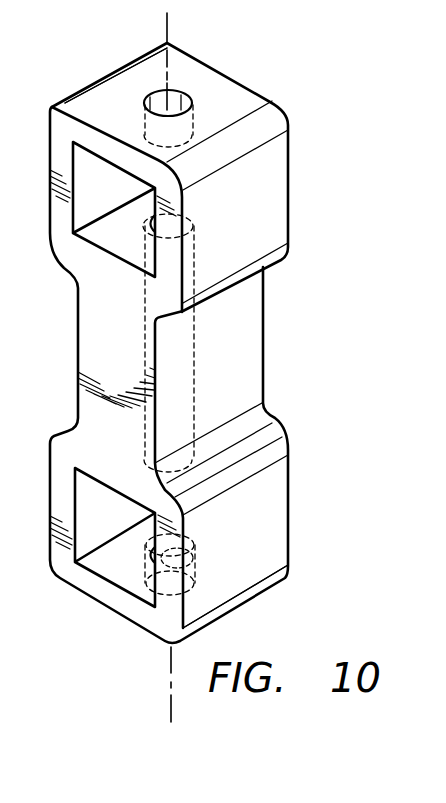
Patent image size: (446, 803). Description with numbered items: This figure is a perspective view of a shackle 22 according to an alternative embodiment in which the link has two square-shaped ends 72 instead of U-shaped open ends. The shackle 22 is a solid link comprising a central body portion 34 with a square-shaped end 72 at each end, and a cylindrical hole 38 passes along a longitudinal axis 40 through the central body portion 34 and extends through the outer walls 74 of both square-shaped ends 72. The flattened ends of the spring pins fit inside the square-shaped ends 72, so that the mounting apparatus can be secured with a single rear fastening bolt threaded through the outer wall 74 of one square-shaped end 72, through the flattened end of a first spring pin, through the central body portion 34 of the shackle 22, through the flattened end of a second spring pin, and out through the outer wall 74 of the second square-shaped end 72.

The shackle 22 is at (283, 347).
The central body portion 34 is at (90, 343).
The cylindrical hole 38 is at (177, 88).
The longitudinal axis 40 is at (167, 28).
The square-shaped end 72 is at (280, 202).
The outer wall 74 is at (113, 90).